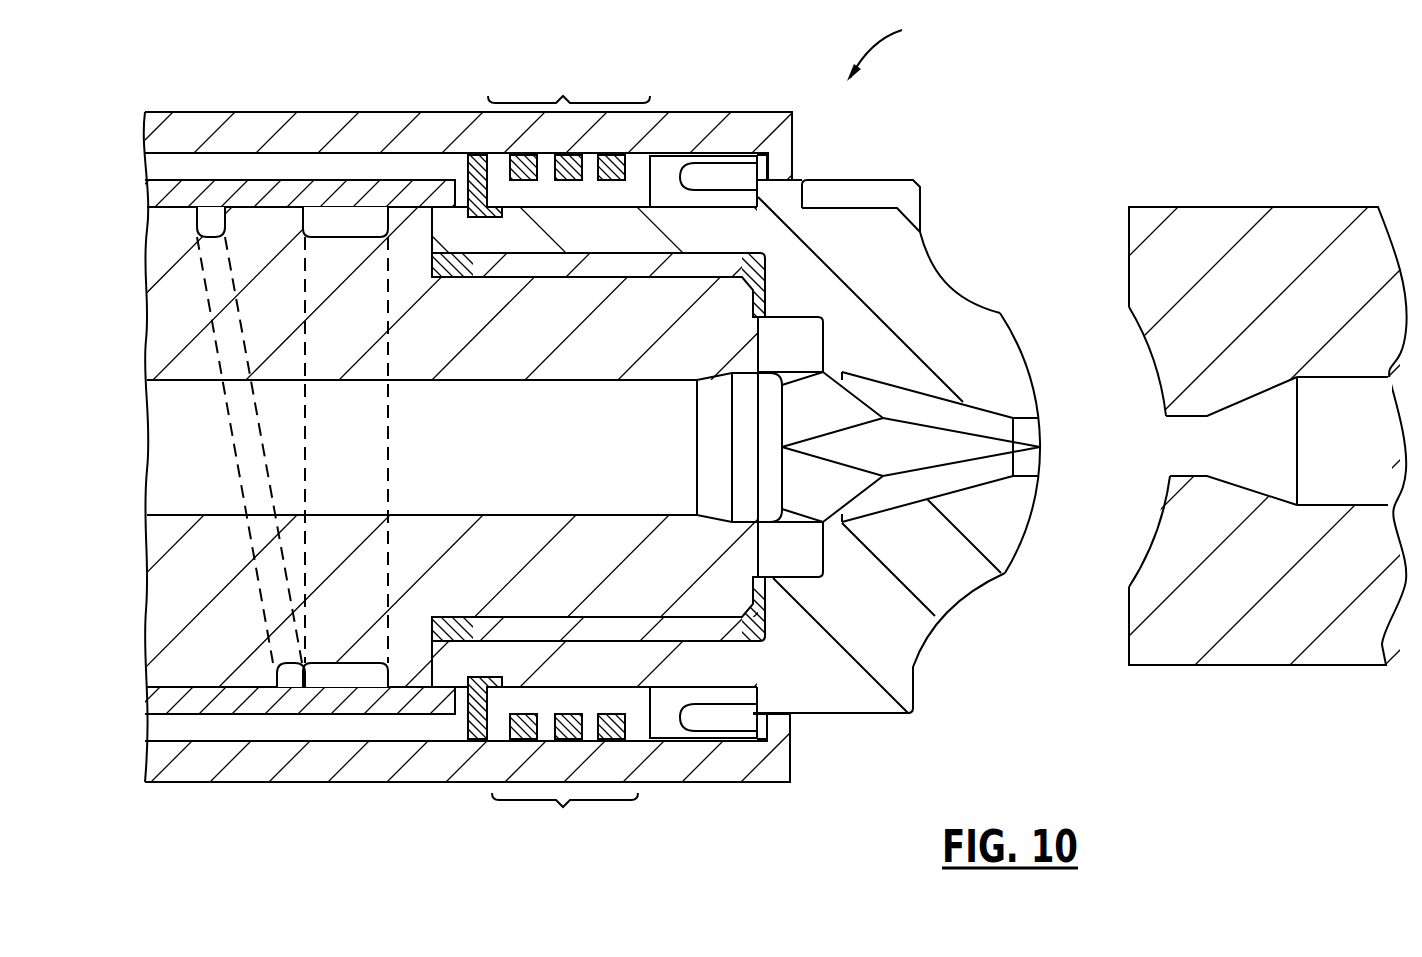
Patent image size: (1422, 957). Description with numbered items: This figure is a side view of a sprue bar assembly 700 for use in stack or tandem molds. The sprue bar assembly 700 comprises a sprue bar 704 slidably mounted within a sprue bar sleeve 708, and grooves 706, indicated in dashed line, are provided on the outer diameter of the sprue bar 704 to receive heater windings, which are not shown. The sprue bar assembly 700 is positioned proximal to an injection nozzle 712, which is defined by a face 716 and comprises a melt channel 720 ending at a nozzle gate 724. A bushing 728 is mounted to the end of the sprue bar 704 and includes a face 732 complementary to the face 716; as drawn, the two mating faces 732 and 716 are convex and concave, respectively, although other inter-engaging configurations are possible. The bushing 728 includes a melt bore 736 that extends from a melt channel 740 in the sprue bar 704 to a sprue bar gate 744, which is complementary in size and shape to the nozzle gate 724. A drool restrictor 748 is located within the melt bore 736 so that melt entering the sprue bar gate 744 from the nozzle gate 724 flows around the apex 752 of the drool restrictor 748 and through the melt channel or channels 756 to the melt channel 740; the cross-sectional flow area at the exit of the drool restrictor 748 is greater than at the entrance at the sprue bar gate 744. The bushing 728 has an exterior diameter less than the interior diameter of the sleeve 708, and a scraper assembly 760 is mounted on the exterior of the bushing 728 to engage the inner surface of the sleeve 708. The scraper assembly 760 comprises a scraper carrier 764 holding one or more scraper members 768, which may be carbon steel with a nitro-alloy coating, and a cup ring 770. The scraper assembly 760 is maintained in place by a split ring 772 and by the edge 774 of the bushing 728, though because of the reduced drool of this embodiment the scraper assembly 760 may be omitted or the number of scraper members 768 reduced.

The sprue bar assembly 700 is at (900, 46).
The sprue bar 704 is at (162, 195).
The grooves 706 is at (252, 521).
The sprue bar sleeve 708 is at (359, 112).
The injection nozzle 712 is at (1213, 205).
The face 716 is at (1133, 315).
The melt channel 720 is at (1367, 463).
The nozzle gate 724 is at (1225, 463).
The bushing 728 is at (947, 273).
The face 732 is at (1027, 363).
The melt bore 736 is at (925, 400).
The melt channel 740 is at (557, 463).
The sprue bar gate 744 is at (1044, 418).
The drool restrictor 748 is at (809, 360).
The tip outlet 752 is at (1044, 443).
The melt channels 756 is at (837, 422).
The scraper assembly 760 is at (601, 453).
The scraper carrier 764 is at (633, 192).
The scraper members 768 is at (610, 181).
The cup ring 770 is at (757, 731).
The split ring 772 is at (470, 718).
The edge 774 is at (755, 697).